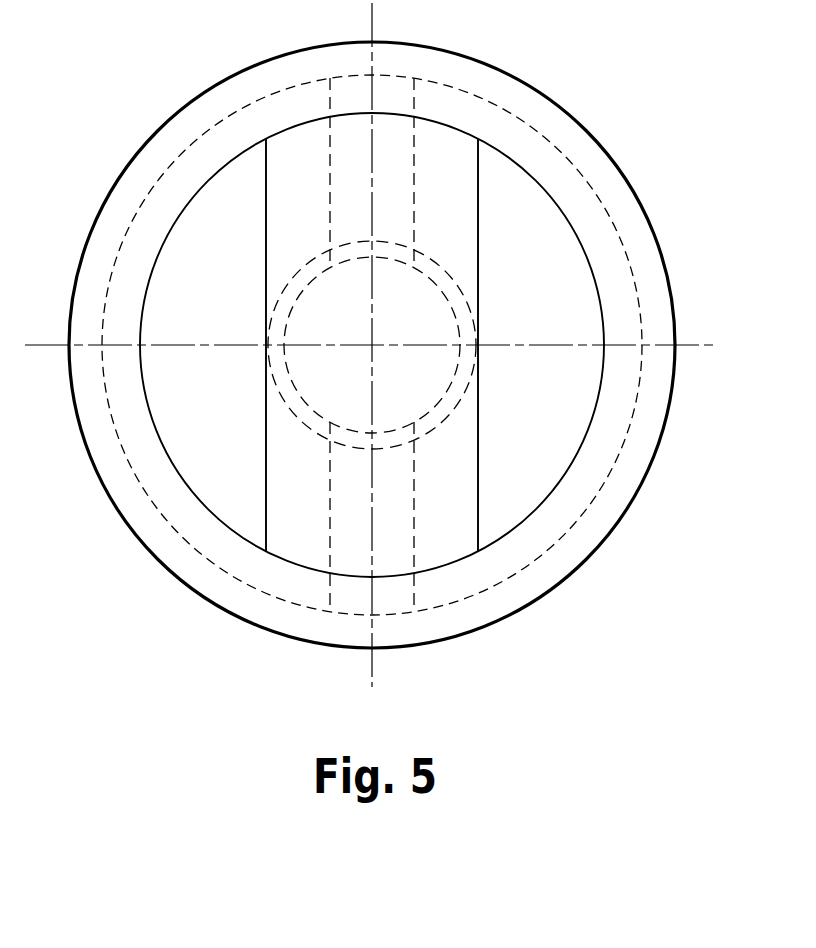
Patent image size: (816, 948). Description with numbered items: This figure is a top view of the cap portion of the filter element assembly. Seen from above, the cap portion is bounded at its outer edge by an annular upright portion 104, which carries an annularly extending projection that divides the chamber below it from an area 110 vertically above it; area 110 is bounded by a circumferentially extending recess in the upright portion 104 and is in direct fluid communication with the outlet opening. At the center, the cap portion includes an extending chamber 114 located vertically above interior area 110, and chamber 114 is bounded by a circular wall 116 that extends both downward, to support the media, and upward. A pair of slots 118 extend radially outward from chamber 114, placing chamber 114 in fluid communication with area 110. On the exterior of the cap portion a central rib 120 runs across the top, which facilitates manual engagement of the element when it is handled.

The annular upright portion 104 is at (602, 230).
The area 110 is at (593, 530).
The chamber 114 is at (358, 382).
The circular wall 116 is at (460, 357).
The slots 118 is at (415, 525).
The central rib 120 is at (478, 288).